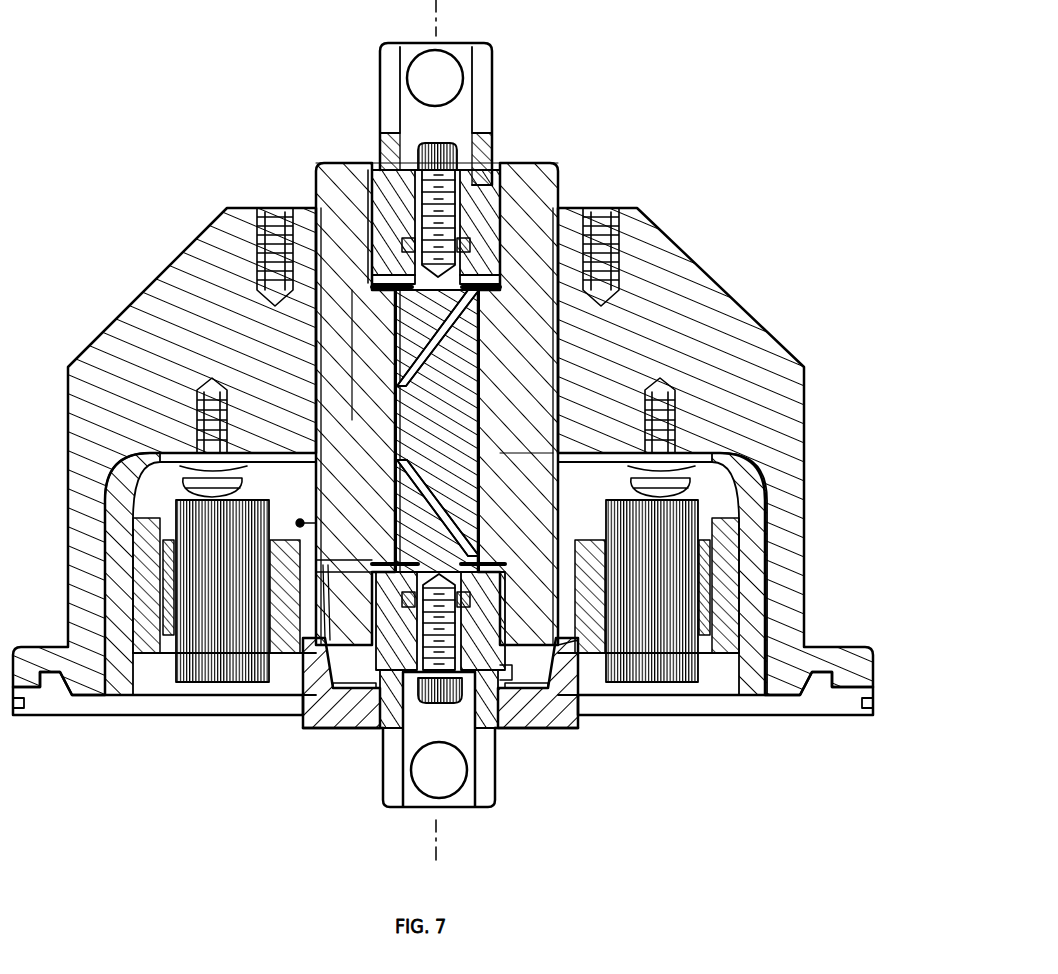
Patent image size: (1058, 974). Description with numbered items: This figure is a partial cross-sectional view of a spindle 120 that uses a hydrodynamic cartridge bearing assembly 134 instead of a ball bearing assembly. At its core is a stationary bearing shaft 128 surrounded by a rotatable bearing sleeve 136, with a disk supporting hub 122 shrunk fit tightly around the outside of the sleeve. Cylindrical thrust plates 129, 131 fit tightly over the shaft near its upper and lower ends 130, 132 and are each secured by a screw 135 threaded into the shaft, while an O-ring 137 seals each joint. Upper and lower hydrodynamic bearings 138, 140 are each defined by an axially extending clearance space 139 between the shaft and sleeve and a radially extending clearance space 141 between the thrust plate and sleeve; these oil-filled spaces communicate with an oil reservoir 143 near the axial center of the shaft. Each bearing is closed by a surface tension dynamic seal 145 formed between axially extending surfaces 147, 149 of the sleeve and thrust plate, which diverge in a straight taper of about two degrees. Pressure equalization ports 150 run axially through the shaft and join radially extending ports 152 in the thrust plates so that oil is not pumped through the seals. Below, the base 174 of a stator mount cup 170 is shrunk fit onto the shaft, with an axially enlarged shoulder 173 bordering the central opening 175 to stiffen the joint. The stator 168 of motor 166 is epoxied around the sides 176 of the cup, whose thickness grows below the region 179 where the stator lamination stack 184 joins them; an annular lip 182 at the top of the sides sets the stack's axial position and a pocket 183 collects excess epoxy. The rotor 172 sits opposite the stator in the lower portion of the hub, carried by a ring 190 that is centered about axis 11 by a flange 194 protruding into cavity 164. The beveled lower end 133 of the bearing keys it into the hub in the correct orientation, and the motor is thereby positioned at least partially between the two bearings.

The axis 11 is at (437, 24).
The spindle 120 is at (690, 96).
The disk supporting hub 122 is at (688, 272).
The bearing shaft 128 is at (487, 46).
The thrust plate 129 is at (482, 170).
The upper end 130 is at (381, 88).
The thrust plate 131 is at (519, 612).
The lower end 132 is at (498, 776).
The lower end 133 is at (580, 690).
The hydrodynamic cartridge bearing assembly 134 is at (588, 148).
The screw 135 is at (425, 705).
The bearing sleeve 136 is at (536, 178).
The O-ring 137 is at (382, 562).
The hydrodynamic bearing 138 is at (401, 338).
The axially extending clearance space 139 is at (398, 302).
The hydrodynamic bearing 140 is at (519, 528).
The radially extending clearance space 141 is at (358, 283).
The oil reservoir 143 is at (392, 420).
The surface tension dynamic seal 145 is at (360, 203).
The axially extending surface 147 is at (320, 180).
The axially extending surface 149 is at (374, 195).
The pressure equalization port 150 is at (398, 330).
The pressure equalization port 152 is at (352, 284).
The cavity 164 is at (296, 501).
The motor 166 is at (210, 742).
The stator 168 is at (168, 673).
The stator mount cup 170 is at (330, 732).
The rotor 172 is at (146, 672).
The shoulder 173 is at (506, 680).
The base 174 is at (360, 729).
The central opening 175 is at (478, 742).
The sides 176 is at (352, 628).
The region 179 is at (318, 580).
The annular lip 182 is at (302, 521).
The pocket 183 is at (320, 566).
The stator lamination stack 184 is at (600, 540).
The ring 190 is at (120, 592).
The flange 194 is at (598, 452).